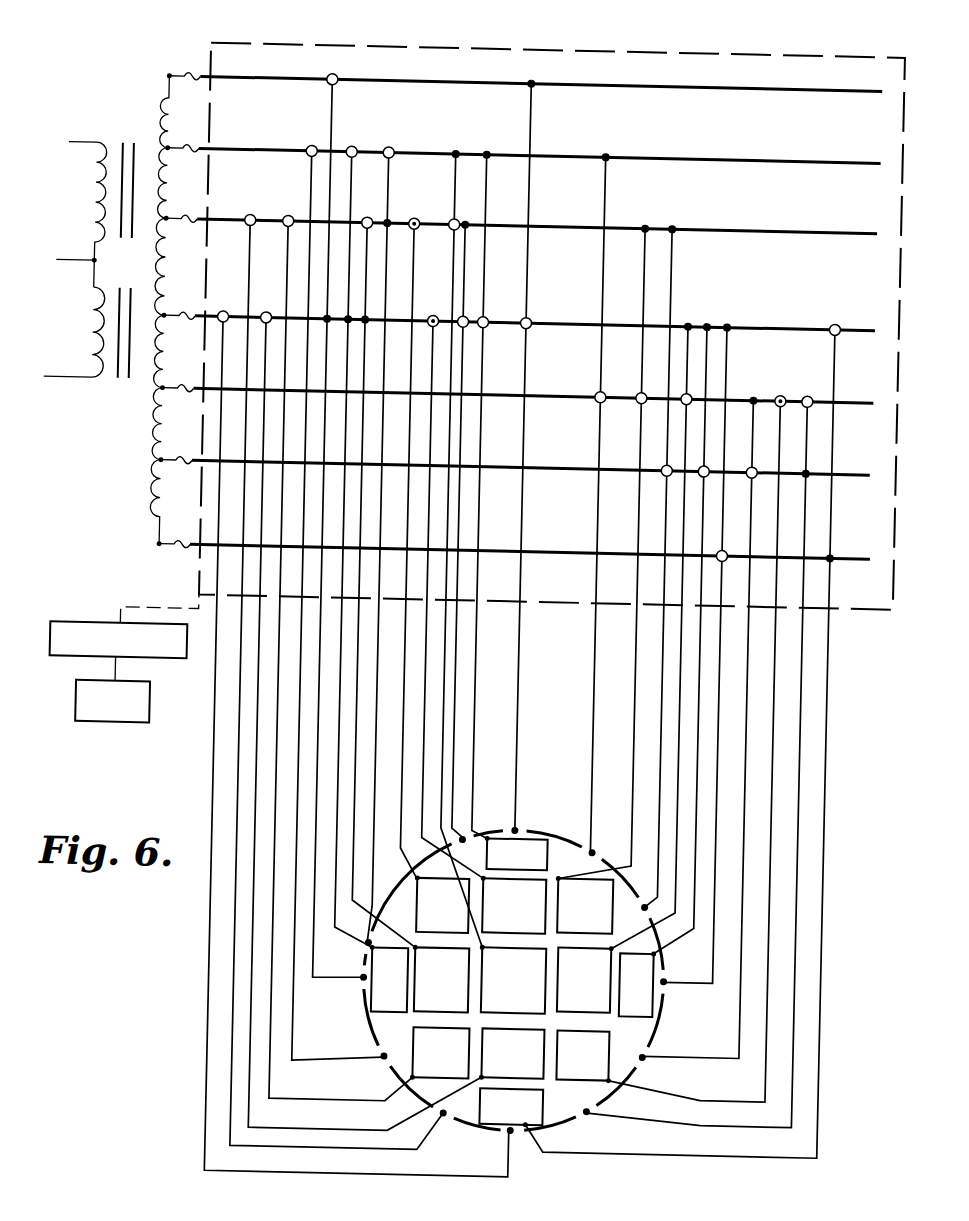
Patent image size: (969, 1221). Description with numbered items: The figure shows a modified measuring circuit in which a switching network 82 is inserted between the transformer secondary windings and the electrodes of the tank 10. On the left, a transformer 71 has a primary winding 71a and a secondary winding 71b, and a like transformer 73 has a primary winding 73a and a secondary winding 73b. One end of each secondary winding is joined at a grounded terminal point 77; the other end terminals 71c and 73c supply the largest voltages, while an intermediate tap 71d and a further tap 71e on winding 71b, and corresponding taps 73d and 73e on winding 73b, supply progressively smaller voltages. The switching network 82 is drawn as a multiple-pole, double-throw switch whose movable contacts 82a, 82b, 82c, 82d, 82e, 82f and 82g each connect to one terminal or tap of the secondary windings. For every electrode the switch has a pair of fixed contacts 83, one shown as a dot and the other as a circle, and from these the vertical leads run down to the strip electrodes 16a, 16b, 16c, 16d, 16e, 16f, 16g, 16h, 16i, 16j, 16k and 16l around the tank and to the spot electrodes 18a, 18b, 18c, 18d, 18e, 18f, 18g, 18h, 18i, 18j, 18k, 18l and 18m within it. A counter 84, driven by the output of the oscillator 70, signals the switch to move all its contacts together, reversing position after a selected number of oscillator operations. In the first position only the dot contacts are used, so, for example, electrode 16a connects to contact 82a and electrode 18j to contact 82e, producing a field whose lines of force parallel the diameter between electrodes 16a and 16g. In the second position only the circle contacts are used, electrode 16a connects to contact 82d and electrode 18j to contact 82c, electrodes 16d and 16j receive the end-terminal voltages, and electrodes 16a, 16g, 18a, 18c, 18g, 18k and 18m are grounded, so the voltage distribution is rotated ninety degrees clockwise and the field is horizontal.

The tank 10 is at (536, 808).
The strip electrode 16a is at (538, 818).
The tank electrode 16b is at (612, 837).
The tank electrode 16c is at (664, 891).
The strip electrode 16d is at (686, 966).
The tank electrode 16e is at (668, 1041).
The tank electrode 16f is at (612, 1100).
The strip electrode 16g is at (536, 1122).
The tank electrode 16h is at (467, 1105).
The tank electrode 16i is at (404, 1049).
The strip electrode 16j is at (383, 975).
The tank electrode 16k is at (386, 936).
The tank electrode 16l is at (483, 824).
The spot electrode 18a is at (516, 853).
The spot electrode 18b is at (442, 904).
The spot electrode 18c is at (513, 905).
The spot electrode 18d is at (584, 905).
The spot electrode 18e is at (388, 978).
The spot electrode 18f is at (440, 979).
The spot electrode 18g is at (512, 979).
The spot electrode 18h is at (585, 979).
The spot electrode 18i is at (637, 984).
The spot electrode 18j is at (440, 1054).
The spot electrode 18k is at (512, 1054).
The spot electrode 18l is at (584, 1057).
The spot electrode 18m is at (511, 1107).
The oscillator 70 is at (101, 719).
The transformer 71 is at (128, 128).
The primary winding 71a is at (100, 140).
The secondary winding 71b is at (160, 98).
The end terminal 71c is at (171, 72).
The intermediate tap 71d is at (171, 144).
The tap 71e is at (171, 214).
The transformer 73 is at (124, 388).
The primary winding 73a is at (100, 335).
The secondary winding 73b is at (163, 500).
The end terminal 73c is at (171, 540).
The intermediate tap 73d is at (171, 456).
The tap 73e is at (171, 384).
The grounded terminal point 77 is at (171, 311).
The switching network 82 is at (508, 38).
The movable contact 82a is at (290, 72).
The movable contact 82b is at (290, 144).
The movable contact 82c is at (245, 214).
The movable contact 82d is at (222, 311).
The movable contact 82e is at (210, 384).
The movable contact 82f is at (210, 456).
The movable contact 82g is at (205, 540).
The fixed contacts 83 is at (420, 209).
The counter 84 is at (192, 656).